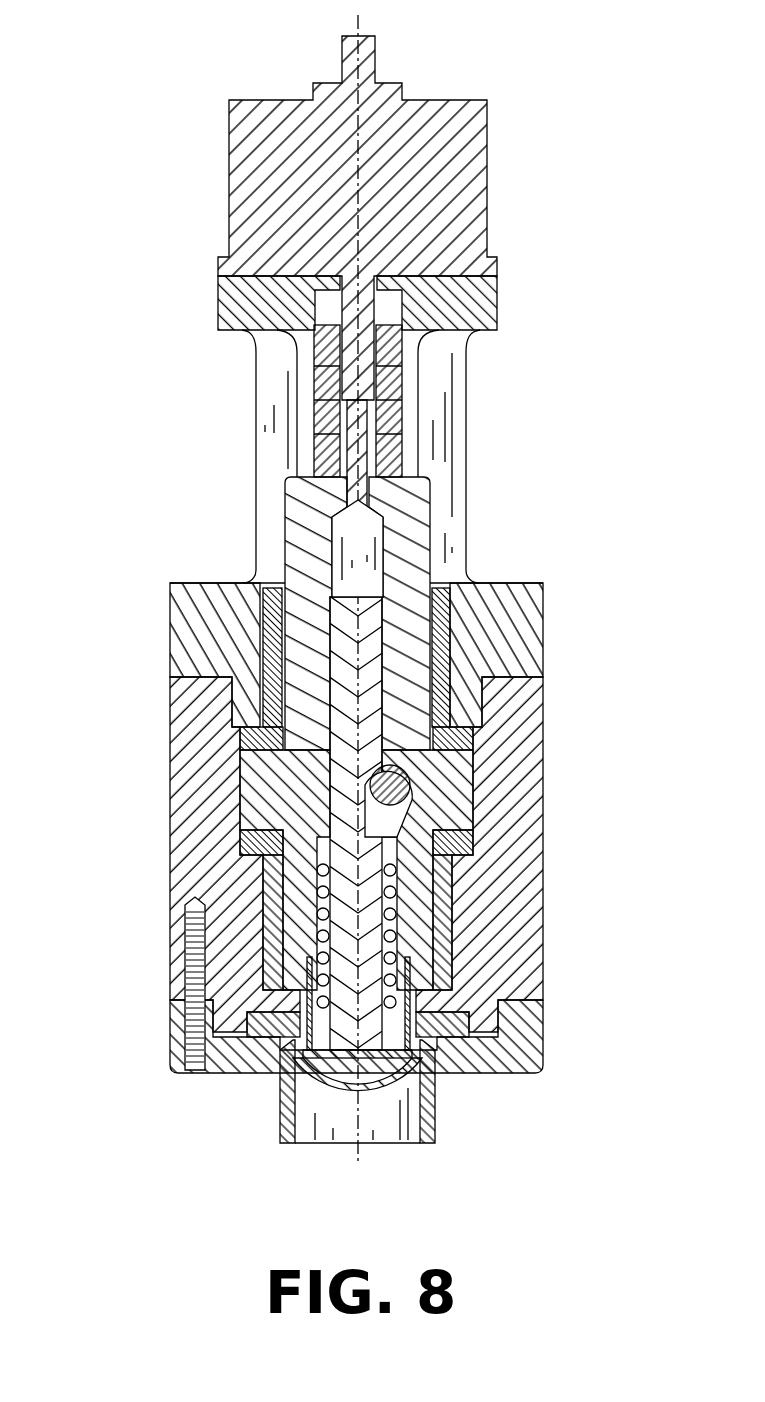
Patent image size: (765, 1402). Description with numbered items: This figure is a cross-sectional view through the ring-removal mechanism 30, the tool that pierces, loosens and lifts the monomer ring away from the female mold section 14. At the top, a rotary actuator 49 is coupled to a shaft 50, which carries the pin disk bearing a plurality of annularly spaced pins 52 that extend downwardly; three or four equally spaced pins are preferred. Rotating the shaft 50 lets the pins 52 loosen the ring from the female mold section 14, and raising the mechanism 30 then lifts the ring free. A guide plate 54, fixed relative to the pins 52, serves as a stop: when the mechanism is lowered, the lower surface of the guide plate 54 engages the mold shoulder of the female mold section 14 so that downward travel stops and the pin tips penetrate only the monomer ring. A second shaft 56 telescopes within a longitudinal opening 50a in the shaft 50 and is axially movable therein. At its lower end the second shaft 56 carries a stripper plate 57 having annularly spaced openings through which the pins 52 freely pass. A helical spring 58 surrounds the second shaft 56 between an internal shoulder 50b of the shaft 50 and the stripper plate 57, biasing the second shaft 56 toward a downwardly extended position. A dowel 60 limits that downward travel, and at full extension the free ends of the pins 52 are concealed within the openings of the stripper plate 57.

The female mold section 14 is at (437, 1100).
The mechanism 30 is at (118, 394).
The rotary actuator 49 is at (440, 103).
The shaft 50 is at (457, 797).
The longitudinal opening 50a is at (376, 546).
The internal shoulder 50b is at (437, 830).
The pins 52 is at (262, 1032).
The guide plate 54 is at (515, 1076).
The second shaft 56 is at (333, 778).
The stripper plate 57 is at (390, 1044).
The helical spring 58 is at (453, 893).
The dowel 60 is at (400, 780).